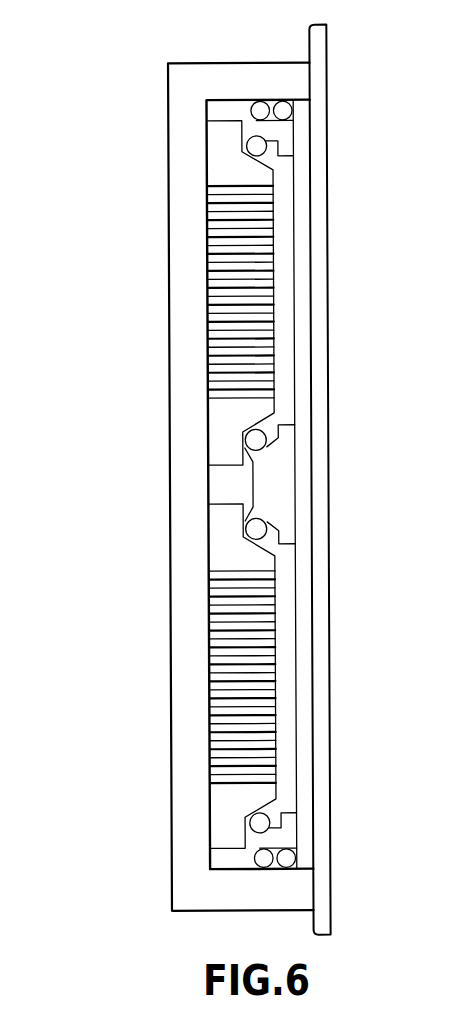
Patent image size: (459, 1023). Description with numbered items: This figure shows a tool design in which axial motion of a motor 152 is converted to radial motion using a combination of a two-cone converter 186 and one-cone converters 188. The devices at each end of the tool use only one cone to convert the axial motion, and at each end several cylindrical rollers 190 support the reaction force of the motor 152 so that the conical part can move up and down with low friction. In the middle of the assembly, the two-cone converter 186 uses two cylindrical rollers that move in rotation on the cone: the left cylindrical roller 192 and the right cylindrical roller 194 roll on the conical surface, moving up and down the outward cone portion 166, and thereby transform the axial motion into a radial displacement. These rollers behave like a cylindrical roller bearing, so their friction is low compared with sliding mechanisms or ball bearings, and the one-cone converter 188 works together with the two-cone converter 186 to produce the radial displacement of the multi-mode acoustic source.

The motor 152 is at (132, 222).
The cylindrical rollers 190 is at (260, 108).
The one-cone converter 188 is at (283, 132).
The left cylindrical roller 192 is at (253, 442).
The outward cone portion 166 is at (278, 460).
The two-cone converter 186 is at (283, 478).
The right cylindrical roller 194 is at (256, 529).